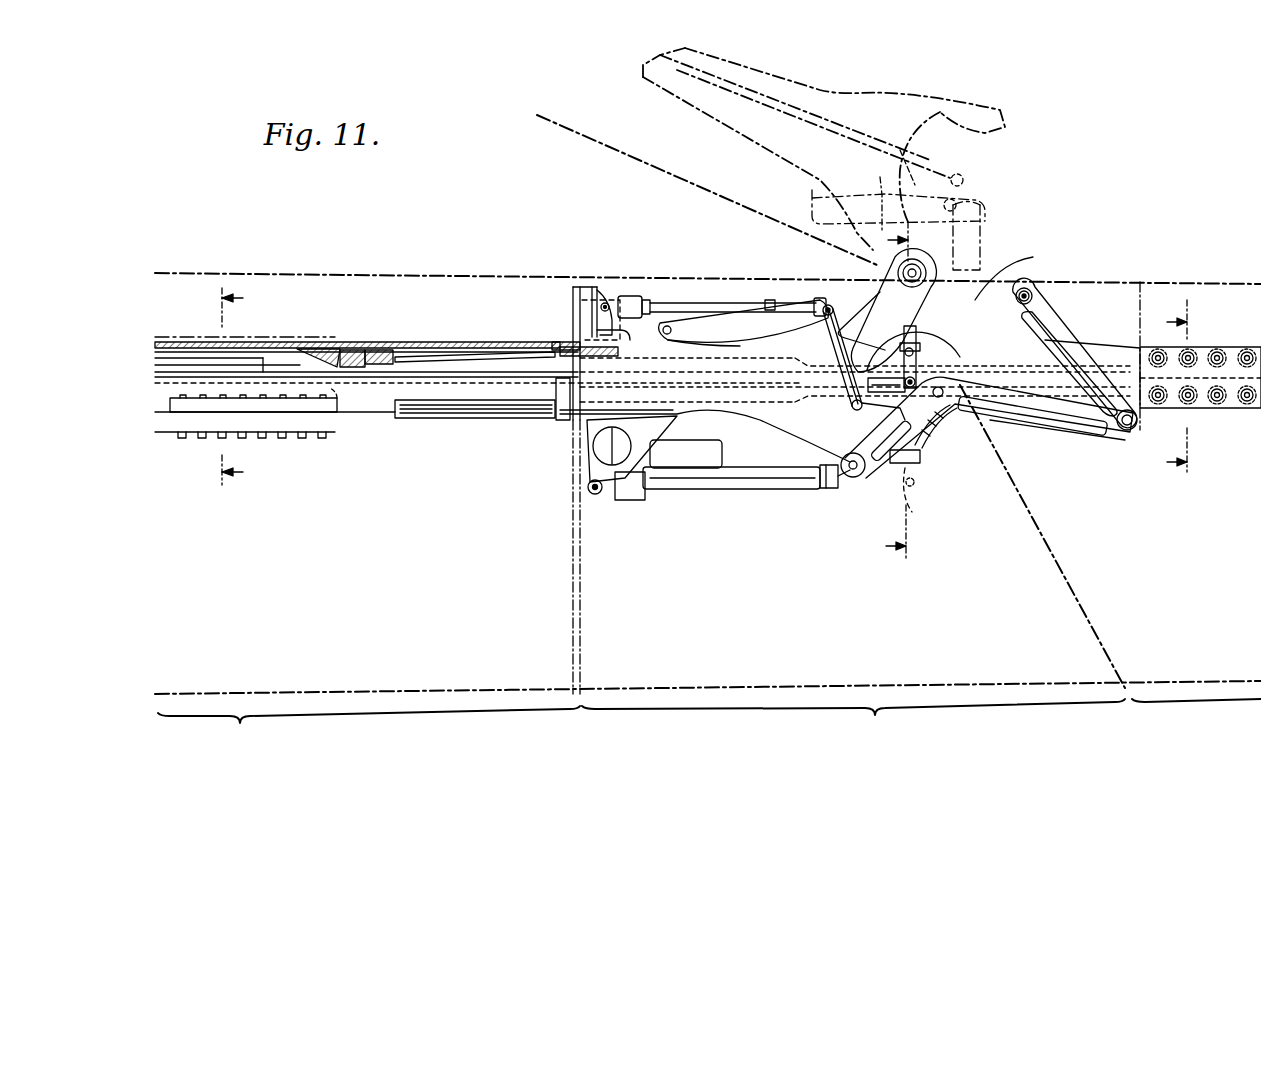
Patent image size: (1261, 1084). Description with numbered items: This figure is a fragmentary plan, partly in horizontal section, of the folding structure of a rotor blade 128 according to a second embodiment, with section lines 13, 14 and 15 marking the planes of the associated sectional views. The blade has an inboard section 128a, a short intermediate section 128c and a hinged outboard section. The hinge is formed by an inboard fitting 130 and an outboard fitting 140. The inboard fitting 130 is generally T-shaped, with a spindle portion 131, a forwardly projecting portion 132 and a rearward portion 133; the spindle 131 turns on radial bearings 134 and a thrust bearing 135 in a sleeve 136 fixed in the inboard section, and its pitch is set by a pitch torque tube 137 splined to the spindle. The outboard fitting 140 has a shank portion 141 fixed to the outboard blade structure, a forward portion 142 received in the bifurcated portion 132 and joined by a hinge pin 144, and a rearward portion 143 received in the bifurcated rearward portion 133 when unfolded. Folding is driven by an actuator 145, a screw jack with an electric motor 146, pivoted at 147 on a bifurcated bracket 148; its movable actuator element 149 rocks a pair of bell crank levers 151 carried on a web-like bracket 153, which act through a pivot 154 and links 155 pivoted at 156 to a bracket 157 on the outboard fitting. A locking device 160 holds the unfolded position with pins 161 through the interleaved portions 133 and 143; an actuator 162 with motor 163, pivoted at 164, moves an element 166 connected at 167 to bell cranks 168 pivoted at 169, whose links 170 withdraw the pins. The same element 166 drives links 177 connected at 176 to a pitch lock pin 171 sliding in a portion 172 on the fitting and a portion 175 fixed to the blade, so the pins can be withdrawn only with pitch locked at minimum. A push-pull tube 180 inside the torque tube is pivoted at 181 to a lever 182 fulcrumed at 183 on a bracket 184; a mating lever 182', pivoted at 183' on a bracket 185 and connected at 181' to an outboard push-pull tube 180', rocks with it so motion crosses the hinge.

The rotor blade 128 is at (398, 270).
The inboard section 128a is at (369, 727).
The intermediate section 128c is at (921, 715).
The section line 13- 13 is at (885, 391).
The section line 14- 14 is at (219, 386).
The section line 15- 15 is at (1165, 386).
The inboard fitting 130 is at (790, 432).
The spindle portion 131 is at (462, 350).
The forwardly projecting portion 132 is at (865, 298).
The rearward portion 133 is at (862, 476).
The radial bearings 134 is at (380, 348).
The thrust bearing 135 is at (345, 348).
The sleeve 136 is at (335, 337).
The pitch torque tube 137 is at (180, 340).
The outboard fitting 140 is at (848, 92).
The shank portion 141 is at (1128, 348).
The forwardly projecting portion 142 is at (1015, 273).
The rearwardly projecting portion 143 is at (1008, 113).
The hinge pin 144 is at (918, 266).
The actuator 145 is at (690, 494).
The electric motor 146 is at (690, 446).
The pivotal mounting 147 is at (600, 494).
The bifurcated bracket 148 is at (572, 462).
The actuator element 149 is at (830, 490).
The bell crank levers 151 is at (982, 232).
The web-like bracket 153 is at (935, 440).
The pivotal connection 154 is at (1135, 426).
The links 155 is at (1122, 474).
The pivotal connection 156 is at (1032, 292).
The bracket 157 is at (812, 192).
The locking device 160 is at (915, 486).
The locking pins 161 is at (925, 495).
The actuator 162 is at (720, 306).
The electric motor 163 is at (632, 296).
The pivotal mounting 164 is at (608, 303).
The movable element 166 is at (815, 300).
The pivotal connection 167 is at (834, 312).
The bell cranks 168 is at (840, 347).
The pivot 169 is at (853, 411).
The links 170 is at (940, 420).
The pitch lock pin 171 is at (675, 340).
The portion 172 is at (626, 343).
The portion 175 is at (626, 352).
The pivotal connection 176 is at (667, 326).
The links 177 is at (744, 325).
The push-pull tube 180 is at (366, 360).
The push-pull tube 180' is at (795, 107).
The pivotal connection 181 is at (911, 376).
The pivotal connection 181' is at (980, 172).
The lever 182 is at (934, 347).
The mating lever 182' is at (949, 349).
The fulcrum 183 is at (946, 339).
The pivot 183' is at (979, 196).
The bracket 184 is at (893, 340).
The bracket 185 is at (922, 164).